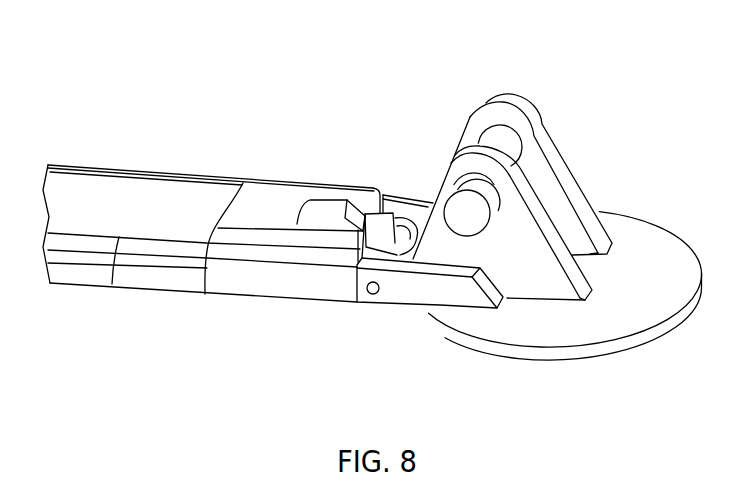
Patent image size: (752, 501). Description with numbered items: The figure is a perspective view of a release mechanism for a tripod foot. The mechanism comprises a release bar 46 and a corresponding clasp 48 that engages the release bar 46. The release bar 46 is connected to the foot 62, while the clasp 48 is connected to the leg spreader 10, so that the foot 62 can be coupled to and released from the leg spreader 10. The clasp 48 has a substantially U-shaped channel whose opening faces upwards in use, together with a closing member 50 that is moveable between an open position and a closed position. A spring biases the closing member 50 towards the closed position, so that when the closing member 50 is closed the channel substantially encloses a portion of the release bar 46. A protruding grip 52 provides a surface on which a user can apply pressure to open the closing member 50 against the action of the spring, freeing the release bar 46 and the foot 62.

The leg spreader 10 is at (112, 284).
The release bar 46 is at (373, 294).
The clasp 48 is at (405, 220).
The closing member 50 is at (392, 230).
The protruding grip 52 is at (318, 206).
The foot 62 is at (586, 213).